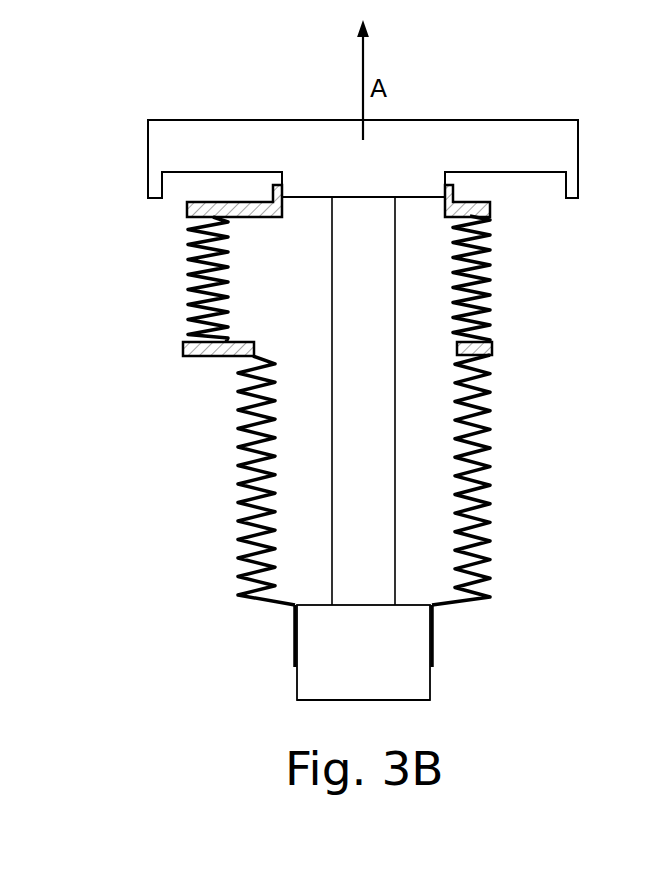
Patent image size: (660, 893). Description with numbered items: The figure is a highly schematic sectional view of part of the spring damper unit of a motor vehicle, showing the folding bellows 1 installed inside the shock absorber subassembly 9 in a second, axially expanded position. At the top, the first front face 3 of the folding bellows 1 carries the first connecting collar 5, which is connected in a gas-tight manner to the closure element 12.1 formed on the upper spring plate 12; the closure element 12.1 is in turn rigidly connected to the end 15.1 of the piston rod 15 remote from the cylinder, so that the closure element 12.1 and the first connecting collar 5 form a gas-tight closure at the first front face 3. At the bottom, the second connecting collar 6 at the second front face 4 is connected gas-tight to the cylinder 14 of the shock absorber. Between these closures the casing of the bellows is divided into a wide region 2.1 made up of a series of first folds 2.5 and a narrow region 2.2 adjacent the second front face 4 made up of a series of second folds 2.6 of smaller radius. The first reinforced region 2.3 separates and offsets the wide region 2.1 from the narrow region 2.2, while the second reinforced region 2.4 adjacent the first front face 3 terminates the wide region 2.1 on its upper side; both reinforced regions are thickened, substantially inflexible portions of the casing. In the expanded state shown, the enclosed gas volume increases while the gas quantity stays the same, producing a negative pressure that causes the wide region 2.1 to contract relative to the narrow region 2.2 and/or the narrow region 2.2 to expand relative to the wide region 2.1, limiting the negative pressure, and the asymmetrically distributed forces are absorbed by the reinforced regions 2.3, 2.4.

The folding bellows 1 is at (168, 238).
The first front face 3 is at (297, 180).
The second front face 4 is at (317, 688).
The first connecting collar 5 is at (262, 192).
The second connecting collar 6 is at (285, 634).
The shock absorber subassembly 9 is at (503, 108).
The spring plate 12 is at (407, 118).
The closure element 12.1 is at (468, 192).
The cylinder 14 is at (402, 663).
The piston rod 15 is at (352, 412).
The end of the piston rod 15.1 is at (363, 202).
The wide region 2.1 is at (500, 258).
The narrow region 2.2 is at (498, 465).
The first reinforced region 2.3 is at (500, 347).
The second reinforced region 2.4 is at (497, 200).
The first folds 2.5 is at (178, 310).
The second folds 2.6 is at (227, 498).